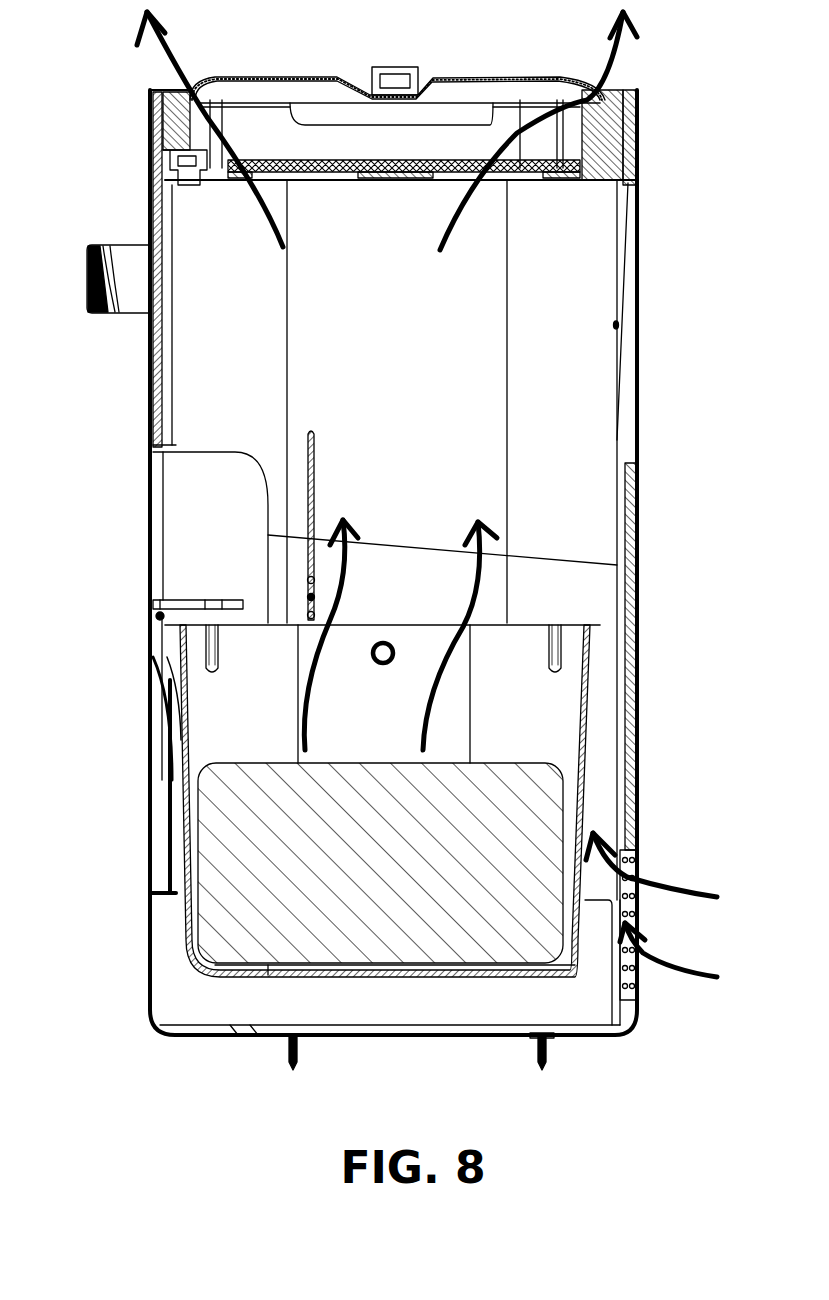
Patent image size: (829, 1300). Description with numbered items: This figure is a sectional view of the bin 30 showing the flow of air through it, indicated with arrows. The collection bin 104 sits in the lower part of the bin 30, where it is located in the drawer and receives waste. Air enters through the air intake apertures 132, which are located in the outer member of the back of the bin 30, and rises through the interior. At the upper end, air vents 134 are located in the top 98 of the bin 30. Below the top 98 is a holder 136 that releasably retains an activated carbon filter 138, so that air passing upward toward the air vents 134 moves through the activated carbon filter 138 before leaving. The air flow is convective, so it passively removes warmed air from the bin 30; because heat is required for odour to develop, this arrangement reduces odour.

The bin 30 is at (662, 266).
The top 98 is at (478, 75).
The collection bin 104 is at (213, 725).
The air intake apertures 132 is at (633, 887).
The air vents 134 is at (607, 90).
The holder 136 is at (388, 178).
The activated carbon filter 138 is at (314, 158).